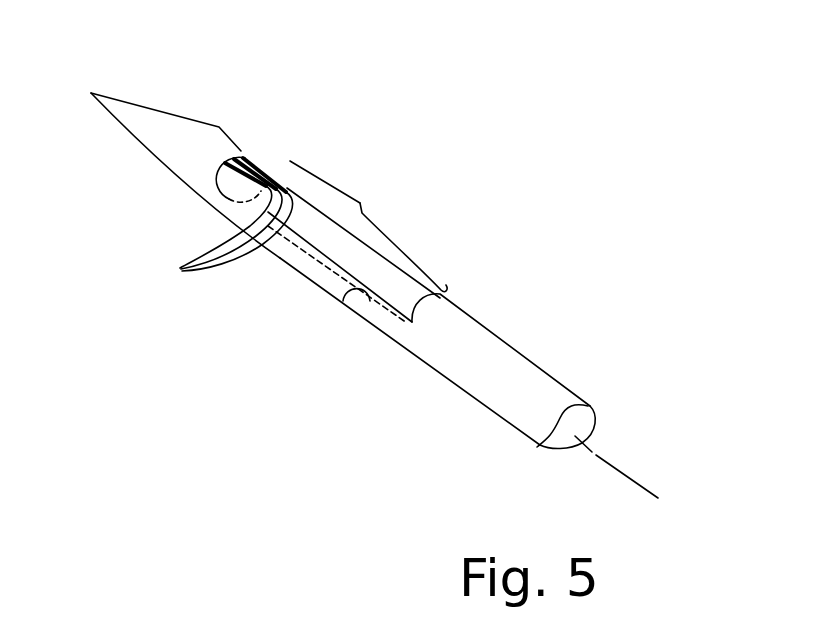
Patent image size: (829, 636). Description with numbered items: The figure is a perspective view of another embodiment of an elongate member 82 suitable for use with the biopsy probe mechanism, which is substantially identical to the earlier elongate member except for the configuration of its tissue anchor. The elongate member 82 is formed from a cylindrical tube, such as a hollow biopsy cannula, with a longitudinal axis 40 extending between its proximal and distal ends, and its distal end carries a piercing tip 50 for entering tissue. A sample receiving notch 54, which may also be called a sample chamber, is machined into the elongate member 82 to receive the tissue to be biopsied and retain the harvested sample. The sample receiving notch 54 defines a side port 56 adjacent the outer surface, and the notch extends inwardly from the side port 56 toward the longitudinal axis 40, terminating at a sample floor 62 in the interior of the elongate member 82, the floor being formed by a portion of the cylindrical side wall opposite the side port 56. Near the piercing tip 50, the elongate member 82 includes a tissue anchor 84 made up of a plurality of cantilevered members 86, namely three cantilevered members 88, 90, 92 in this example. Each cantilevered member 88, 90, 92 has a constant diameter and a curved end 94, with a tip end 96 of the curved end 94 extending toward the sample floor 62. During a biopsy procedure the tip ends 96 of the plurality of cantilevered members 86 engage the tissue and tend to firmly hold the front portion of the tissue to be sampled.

The longitudinal axis 40 is at (618, 467).
The piercing tip 50 is at (91, 93).
The sample receiving notch 54 is at (361, 204).
The side port 56 is at (428, 249).
The sample floor 62 is at (344, 298).
The elongate member 82 is at (606, 226).
The tissue anchor 84 is at (296, 118).
The plurality of cantilevered members 86 is at (297, 150).
The cantilevered member 88 is at (233, 153).
The cantilevered member 90 is at (255, 155).
The cantilevered member 92 is at (268, 160).
The curved end 94 is at (295, 182).
The tip end 96 is at (180, 268).